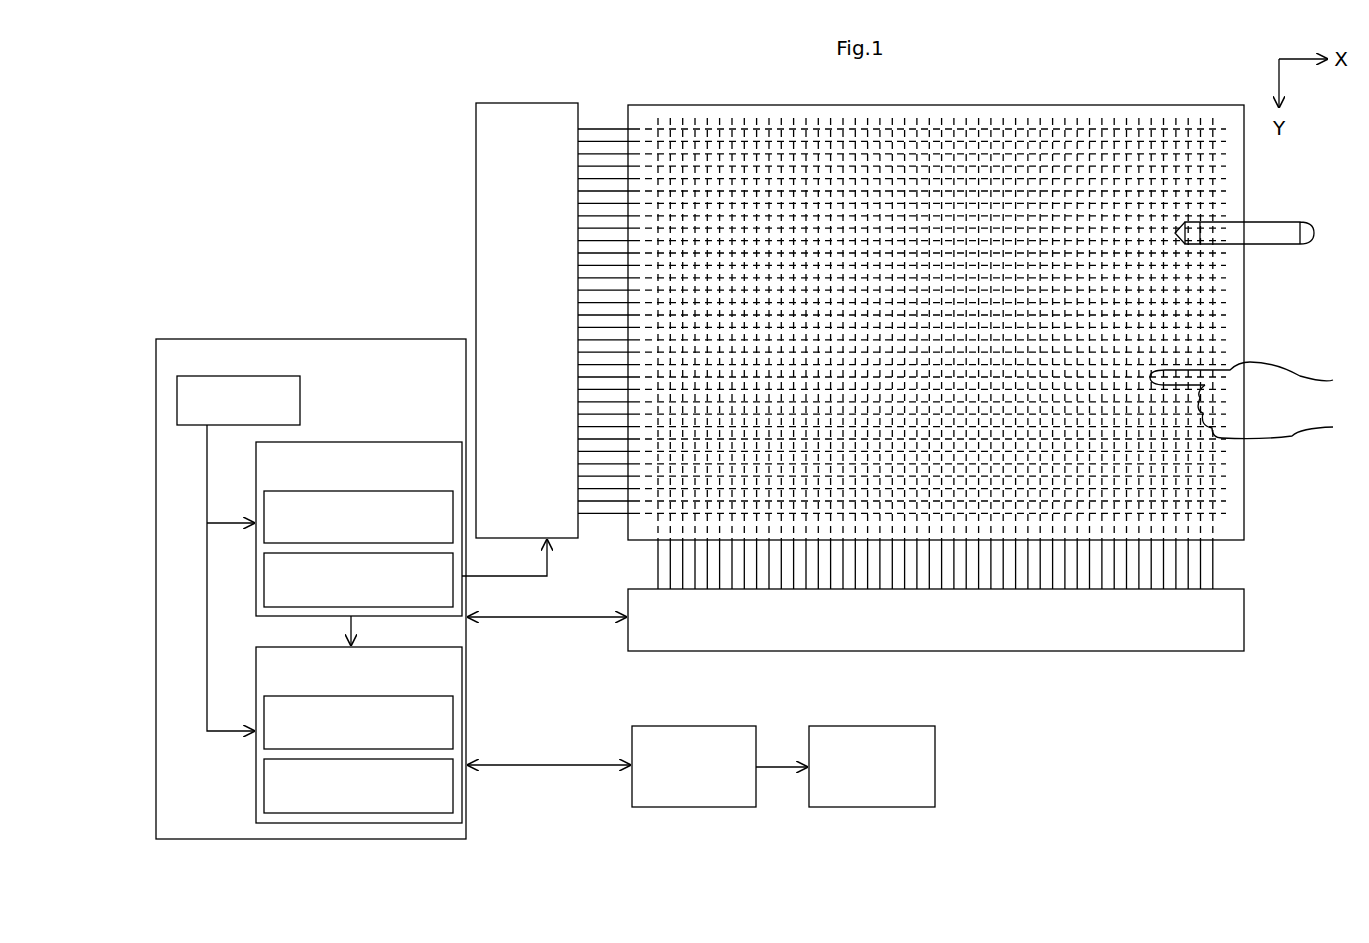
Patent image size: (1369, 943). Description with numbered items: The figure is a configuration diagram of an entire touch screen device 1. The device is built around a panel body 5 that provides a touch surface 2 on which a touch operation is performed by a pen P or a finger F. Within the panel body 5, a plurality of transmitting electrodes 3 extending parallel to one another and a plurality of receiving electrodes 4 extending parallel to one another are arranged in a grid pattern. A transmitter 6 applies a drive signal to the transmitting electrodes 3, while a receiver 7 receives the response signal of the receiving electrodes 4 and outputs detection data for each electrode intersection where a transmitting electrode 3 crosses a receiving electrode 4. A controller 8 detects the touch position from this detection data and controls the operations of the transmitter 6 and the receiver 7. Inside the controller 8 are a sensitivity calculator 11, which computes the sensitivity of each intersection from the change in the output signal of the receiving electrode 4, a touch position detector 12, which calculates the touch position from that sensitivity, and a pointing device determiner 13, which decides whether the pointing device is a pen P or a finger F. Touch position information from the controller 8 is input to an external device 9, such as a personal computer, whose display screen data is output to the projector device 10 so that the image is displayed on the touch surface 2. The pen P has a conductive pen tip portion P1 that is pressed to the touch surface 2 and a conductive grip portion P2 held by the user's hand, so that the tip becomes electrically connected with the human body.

The touch screen device 1 is at (388, 225).
The touch surface 2 is at (935, 321).
The transmitting electrodes 3 is at (716, 140).
The receiving electrodes 4 is at (1190, 481).
The panel body 5 is at (1056, 103).
The transmitter 6 is at (476, 201).
The receiver 7 is at (1058, 652).
The controller 8 is at (268, 338).
The external device 9 is at (733, 726).
The projector device 10 is at (910, 726).
The sensitivity calculator 11 is at (225, 376).
The touch position detector 12 is at (408, 442).
The pointing device determiner 13 is at (428, 647).
The pen P is at (1254, 238).
The pen tip portion P1 is at (1176, 234).
The grip portion P2 is at (1232, 222).
The finger F is at (1170, 370).